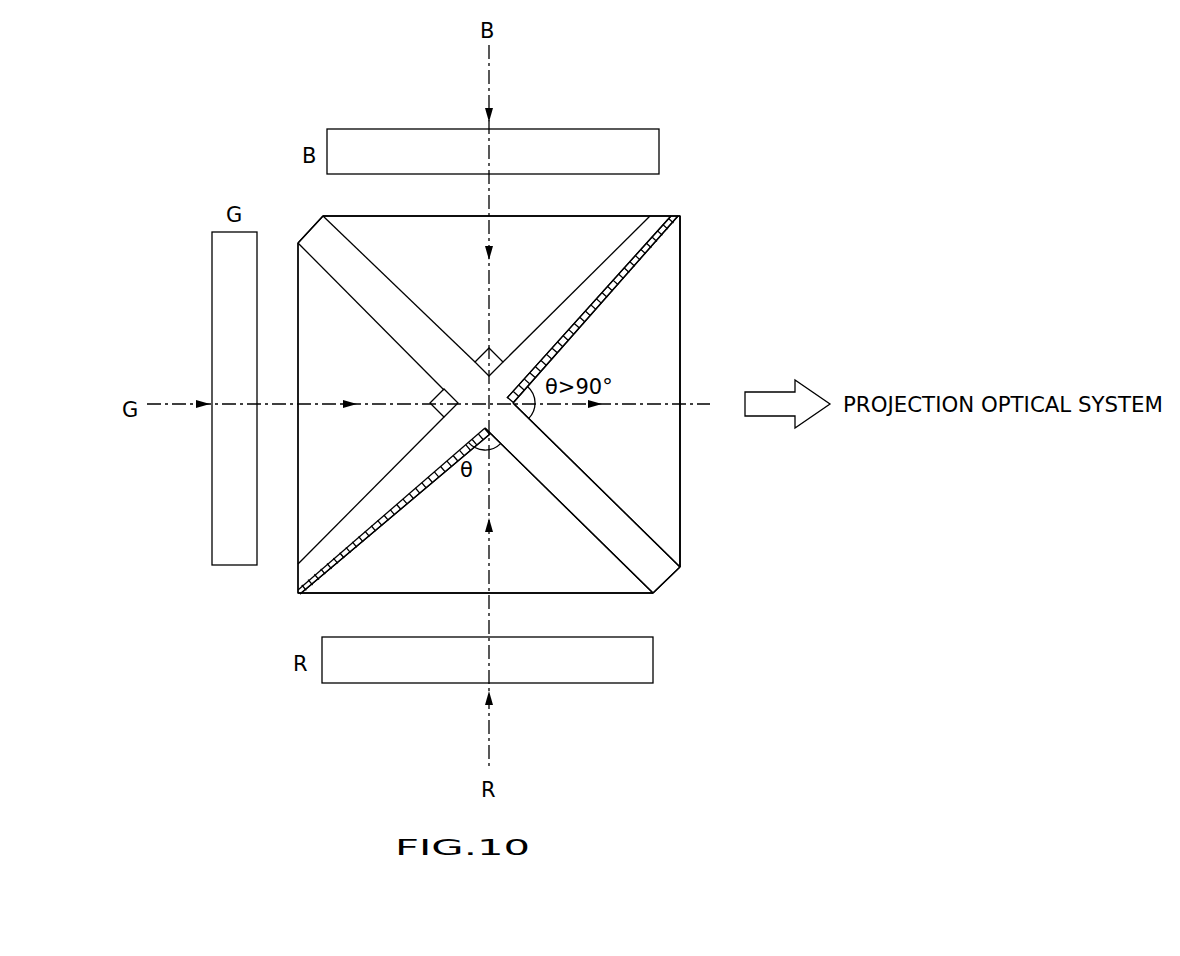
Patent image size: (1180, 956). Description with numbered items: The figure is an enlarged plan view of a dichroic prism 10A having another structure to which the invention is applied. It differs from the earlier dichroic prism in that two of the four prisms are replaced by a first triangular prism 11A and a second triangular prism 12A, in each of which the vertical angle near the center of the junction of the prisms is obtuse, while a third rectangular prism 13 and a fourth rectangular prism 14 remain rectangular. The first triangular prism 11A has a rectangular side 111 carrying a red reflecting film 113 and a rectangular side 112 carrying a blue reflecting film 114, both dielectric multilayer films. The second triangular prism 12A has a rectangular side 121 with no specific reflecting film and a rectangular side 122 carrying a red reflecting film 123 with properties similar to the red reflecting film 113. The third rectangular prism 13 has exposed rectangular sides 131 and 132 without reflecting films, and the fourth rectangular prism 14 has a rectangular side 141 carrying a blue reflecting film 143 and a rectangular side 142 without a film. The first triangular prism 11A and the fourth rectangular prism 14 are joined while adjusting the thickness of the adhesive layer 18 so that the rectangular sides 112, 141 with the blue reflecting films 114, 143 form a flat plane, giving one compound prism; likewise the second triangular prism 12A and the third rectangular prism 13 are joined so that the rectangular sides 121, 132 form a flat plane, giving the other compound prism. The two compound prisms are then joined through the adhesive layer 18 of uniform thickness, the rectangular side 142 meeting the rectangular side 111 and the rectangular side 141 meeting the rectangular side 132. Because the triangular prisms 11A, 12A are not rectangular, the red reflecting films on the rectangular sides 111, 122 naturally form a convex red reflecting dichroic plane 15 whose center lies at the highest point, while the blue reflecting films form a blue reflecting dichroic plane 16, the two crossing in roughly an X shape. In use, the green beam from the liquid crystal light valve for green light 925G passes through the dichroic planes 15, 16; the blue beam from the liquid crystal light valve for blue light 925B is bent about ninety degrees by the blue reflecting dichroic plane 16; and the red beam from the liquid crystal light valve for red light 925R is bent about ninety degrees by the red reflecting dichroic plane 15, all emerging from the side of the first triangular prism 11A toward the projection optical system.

The dichroic prism 10A is at (707, 138).
The first triangular prism 11A is at (668, 313).
The rectangular side of first triangular prism 111 is at (660, 240).
The rectangular side of first triangular prism 112 is at (648, 527).
The red reflecting film 113 is at (662, 227).
The blue reflecting film 114 is at (672, 552).
The second triangular prism 12A is at (550, 578).
The rectangular side of second triangular prism 121 is at (648, 580).
The rectangular side of second triangular prism 122 is at (298, 592).
The red reflecting film 123 is at (312, 580).
The third rectangular prism 13 is at (308, 330).
The rectangular side of third rectangular prism 131 is at (315, 556).
The rectangular side of third rectangular prism 132 is at (308, 280).
The fourth rectangular prism 14 is at (433, 222).
The rectangular side of fourth rectangular prism 141 is at (358, 243).
The rectangular side of fourth rectangular prism 142 is at (656, 220).
The blue reflecting film 143 is at (333, 228).
The red reflecting dichroic plane 15 is at (660, 262).
The blue reflecting dichroic plane 16 is at (612, 488).
The adhesive layer 18 is at (583, 314).
The liquid crystal light valve for blue light 925B is at (577, 136).
The liquid crystal light valve for green light 925G is at (233, 535).
The liquid crystal light valve for red light 925R is at (430, 677).